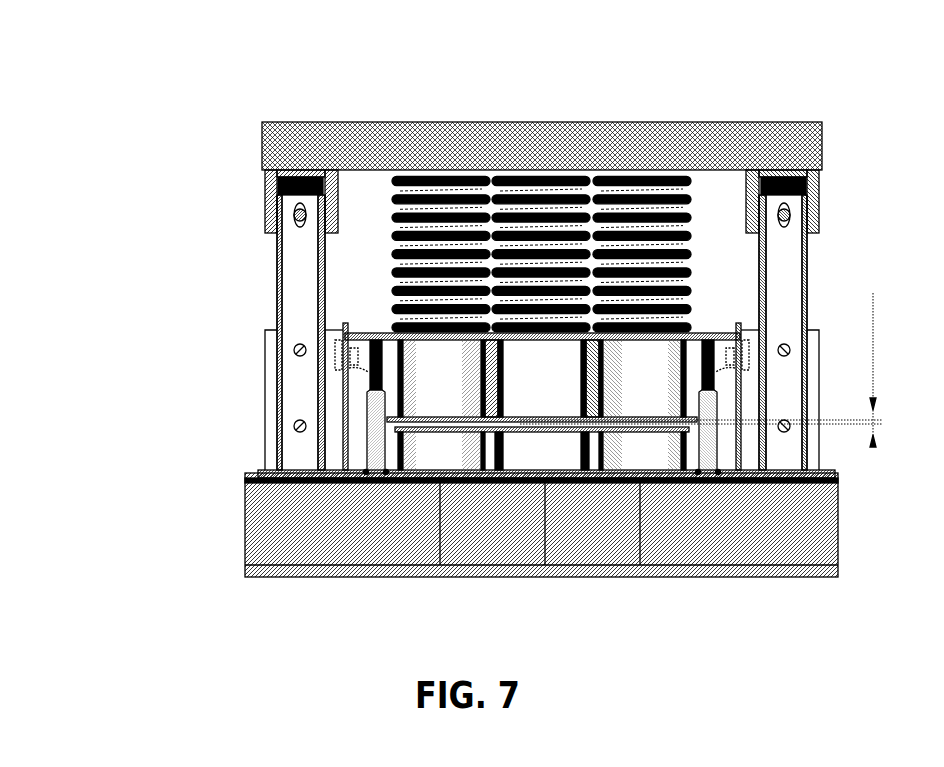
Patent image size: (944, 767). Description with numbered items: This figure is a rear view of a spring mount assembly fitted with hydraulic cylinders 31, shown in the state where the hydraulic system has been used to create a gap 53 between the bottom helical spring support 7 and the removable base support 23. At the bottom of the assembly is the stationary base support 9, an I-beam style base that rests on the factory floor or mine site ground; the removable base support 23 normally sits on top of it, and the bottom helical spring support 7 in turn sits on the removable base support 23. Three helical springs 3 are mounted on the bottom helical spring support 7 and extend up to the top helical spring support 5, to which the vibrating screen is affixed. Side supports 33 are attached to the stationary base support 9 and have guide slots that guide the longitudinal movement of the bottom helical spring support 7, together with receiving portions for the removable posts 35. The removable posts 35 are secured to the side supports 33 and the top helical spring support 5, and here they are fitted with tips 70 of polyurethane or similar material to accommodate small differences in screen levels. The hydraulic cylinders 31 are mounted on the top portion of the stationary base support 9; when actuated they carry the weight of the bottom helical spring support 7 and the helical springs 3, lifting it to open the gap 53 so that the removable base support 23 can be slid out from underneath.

The helical springs 3 is at (418, 210).
The top helical spring support 5 is at (560, 148).
The bottom helical spring support 7 is at (432, 387).
The stationary base support 9 is at (723, 540).
The removable base support 23 is at (446, 452).
The hydraulic cylinders 31 is at (352, 426).
The side supports 33 is at (285, 384).
The removable posts 35 is at (286, 284).
The gap 53 is at (711, 370).
The tips 70 is at (262, 150).